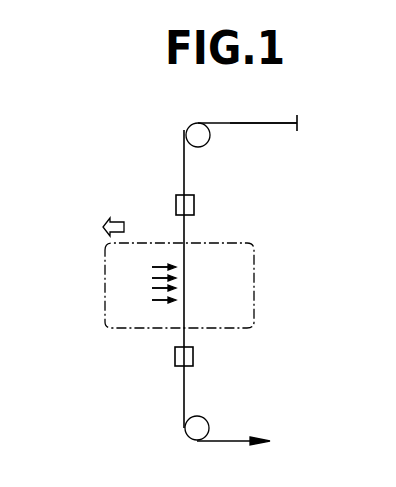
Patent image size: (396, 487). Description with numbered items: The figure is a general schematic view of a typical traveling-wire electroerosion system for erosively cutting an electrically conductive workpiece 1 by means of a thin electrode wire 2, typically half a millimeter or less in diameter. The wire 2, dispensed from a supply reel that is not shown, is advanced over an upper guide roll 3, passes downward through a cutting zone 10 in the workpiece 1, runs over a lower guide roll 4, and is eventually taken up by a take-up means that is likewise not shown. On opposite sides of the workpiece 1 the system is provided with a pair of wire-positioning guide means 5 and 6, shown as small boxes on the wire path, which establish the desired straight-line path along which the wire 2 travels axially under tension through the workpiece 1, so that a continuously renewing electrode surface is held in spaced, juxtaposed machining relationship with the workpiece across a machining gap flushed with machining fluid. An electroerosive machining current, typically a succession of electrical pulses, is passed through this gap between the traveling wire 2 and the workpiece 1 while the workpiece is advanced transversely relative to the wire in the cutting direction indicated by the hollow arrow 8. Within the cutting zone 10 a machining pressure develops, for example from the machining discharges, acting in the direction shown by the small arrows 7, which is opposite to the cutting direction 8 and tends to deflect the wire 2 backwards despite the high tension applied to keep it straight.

The workpiece 1 is at (254, 286).
The electrode wire 2 is at (277, 124).
The guide roll 3 is at (207, 138).
The guide roll 4 is at (208, 417).
The wire-positioning guide means 5 is at (194, 203).
The wire-positioning guide means 6 is at (193, 357).
The arrows indicating machining pressure 7 is at (162, 305).
The arrow indicating cutting direction 8 is at (123, 222).
The cutting zone 10 is at (183, 273).